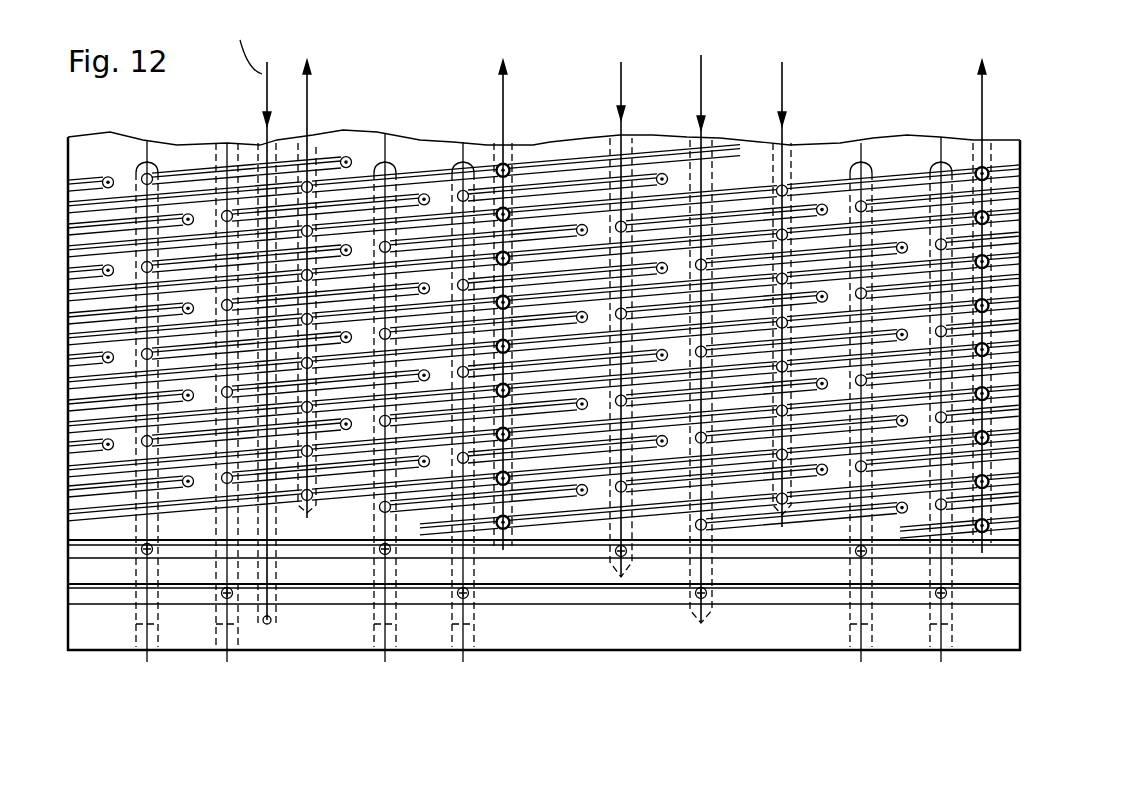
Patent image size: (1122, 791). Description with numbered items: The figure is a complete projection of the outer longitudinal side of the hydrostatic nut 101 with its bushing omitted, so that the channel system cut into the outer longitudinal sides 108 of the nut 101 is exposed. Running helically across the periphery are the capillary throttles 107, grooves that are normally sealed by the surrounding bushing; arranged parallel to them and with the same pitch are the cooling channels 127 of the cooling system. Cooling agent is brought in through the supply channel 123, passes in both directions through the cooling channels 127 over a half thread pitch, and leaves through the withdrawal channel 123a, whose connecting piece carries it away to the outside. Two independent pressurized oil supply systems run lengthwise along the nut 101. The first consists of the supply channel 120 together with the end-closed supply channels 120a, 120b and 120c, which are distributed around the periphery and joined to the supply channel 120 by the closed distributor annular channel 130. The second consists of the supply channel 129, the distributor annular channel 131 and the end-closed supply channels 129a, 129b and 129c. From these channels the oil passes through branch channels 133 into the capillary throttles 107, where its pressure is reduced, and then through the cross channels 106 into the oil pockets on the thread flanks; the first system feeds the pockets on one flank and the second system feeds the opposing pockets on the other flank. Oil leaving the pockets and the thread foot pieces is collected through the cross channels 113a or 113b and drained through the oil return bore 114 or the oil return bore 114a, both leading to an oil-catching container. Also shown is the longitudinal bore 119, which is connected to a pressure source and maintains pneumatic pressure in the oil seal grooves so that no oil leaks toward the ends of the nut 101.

The hydrostatic nut 101 is at (1022, 204).
The cross channels 106 is at (1023, 247).
The capillary throttles 107 is at (837, 212).
The outer longitudinal sides 108 is at (1002, 530).
The cross channels 113a is at (496, 165).
The cross channels 113b is at (496, 213).
The oil return bore 114 is at (516, 152).
The oil return bore 114a is at (987, 155).
The longitudinal bore 119 is at (262, 153).
The supply channel 120 is at (707, 153).
The supply channel 120a is at (935, 615).
The supply channel 120b is at (455, 617).
The supply channel 120c is at (223, 615).
The supply channel 123 is at (825, 250).
The withdrawal channel 123a is at (312, 150).
The cooling channels 127 is at (572, 207).
The supply channel 129 is at (627, 153).
The supply channel 129a is at (855, 615).
The supply channel 129b is at (377, 615).
The supply channel 129c is at (142, 615).
The distributor annular channel 130 is at (658, 593).
The distributor annular channel 131 is at (580, 548).
The branch channels 133 is at (787, 173).